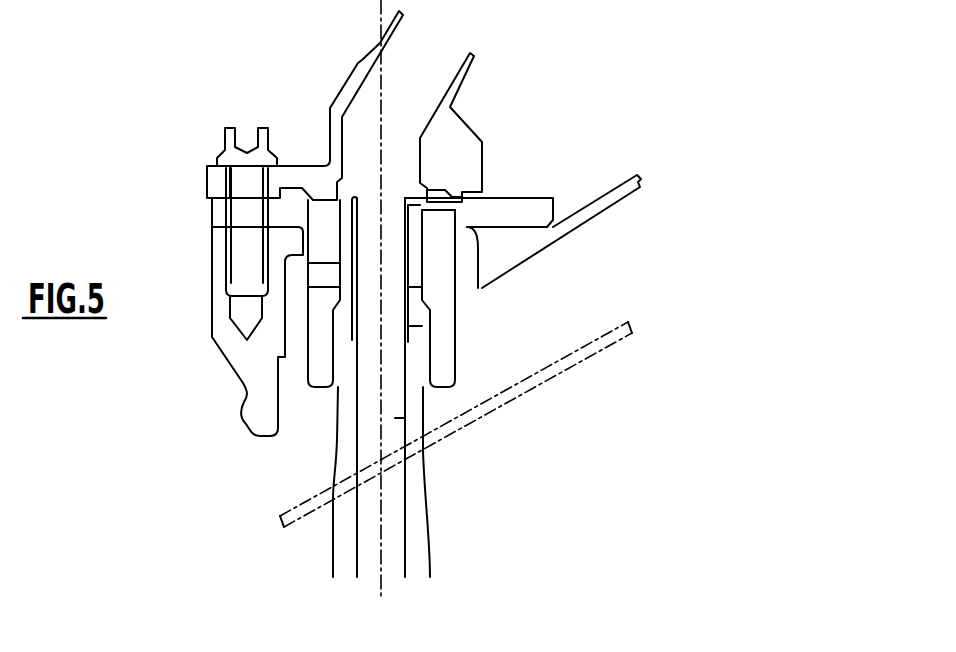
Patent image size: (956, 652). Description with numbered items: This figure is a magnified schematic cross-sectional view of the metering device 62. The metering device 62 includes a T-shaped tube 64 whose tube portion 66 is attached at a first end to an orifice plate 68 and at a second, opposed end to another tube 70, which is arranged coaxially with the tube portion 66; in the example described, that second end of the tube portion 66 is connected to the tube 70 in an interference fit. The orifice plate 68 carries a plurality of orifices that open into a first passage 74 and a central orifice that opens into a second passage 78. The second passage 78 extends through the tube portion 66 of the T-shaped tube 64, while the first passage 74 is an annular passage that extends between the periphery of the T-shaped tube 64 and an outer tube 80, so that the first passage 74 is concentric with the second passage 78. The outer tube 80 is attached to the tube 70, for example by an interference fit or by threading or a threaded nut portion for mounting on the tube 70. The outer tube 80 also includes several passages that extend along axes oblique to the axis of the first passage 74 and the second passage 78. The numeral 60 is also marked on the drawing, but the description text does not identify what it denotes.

The mounting assembly 60 is at (165, 187).
The metering device 62 is at (420, 248).
The T-shaped tube 64 is at (407, 222).
The tube portion 66 is at (480, 285).
The orifice plate 68 is at (438, 185).
The tube 70 is at (423, 457).
The first passage 74 is at (347, 270).
The second passage 78 is at (395, 418).
The outer tube 80 is at (445, 372).